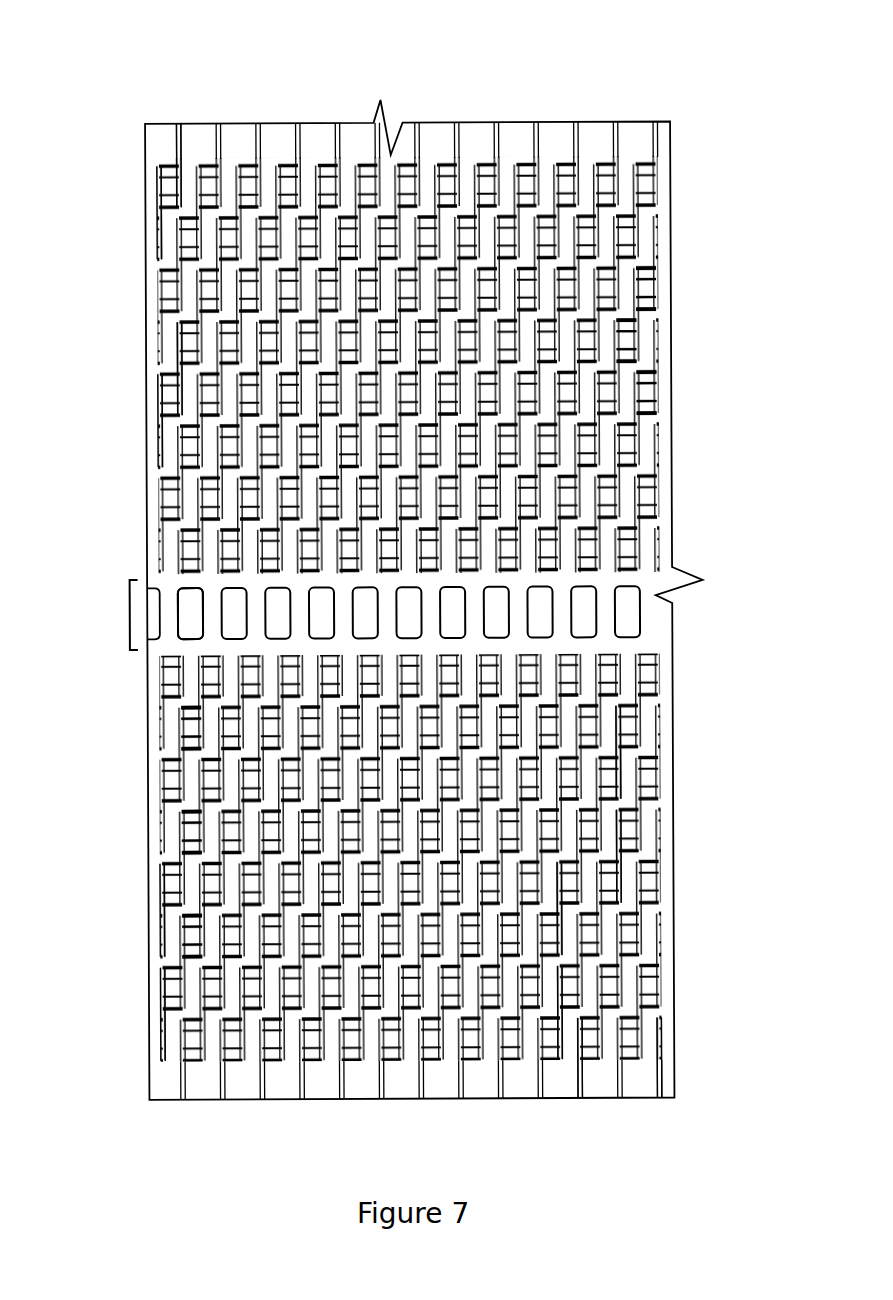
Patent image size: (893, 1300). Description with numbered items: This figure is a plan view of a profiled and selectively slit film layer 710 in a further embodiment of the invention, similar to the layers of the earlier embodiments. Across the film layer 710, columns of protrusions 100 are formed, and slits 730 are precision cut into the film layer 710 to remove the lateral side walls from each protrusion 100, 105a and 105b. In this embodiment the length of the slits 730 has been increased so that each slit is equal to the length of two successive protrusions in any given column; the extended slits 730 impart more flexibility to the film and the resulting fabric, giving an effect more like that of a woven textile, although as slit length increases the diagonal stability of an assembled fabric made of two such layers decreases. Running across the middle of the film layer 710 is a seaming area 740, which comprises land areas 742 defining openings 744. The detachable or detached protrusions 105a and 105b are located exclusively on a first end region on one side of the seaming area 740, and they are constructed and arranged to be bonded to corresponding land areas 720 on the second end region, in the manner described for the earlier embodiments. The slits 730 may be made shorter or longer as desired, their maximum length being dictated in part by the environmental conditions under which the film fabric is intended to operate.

The film layer 710 is at (692, 126).
The slits 730 is at (153, 227).
The land areas 720 is at (165, 442).
The protrusion 100 is at (646, 346).
The detachable protrusion 105a is at (560, 940).
The detachable protrusion 105b is at (621, 789).
The land areas 742 is at (160, 590).
The seaming area 740 is at (126, 618).
The openings 744 is at (188, 633).